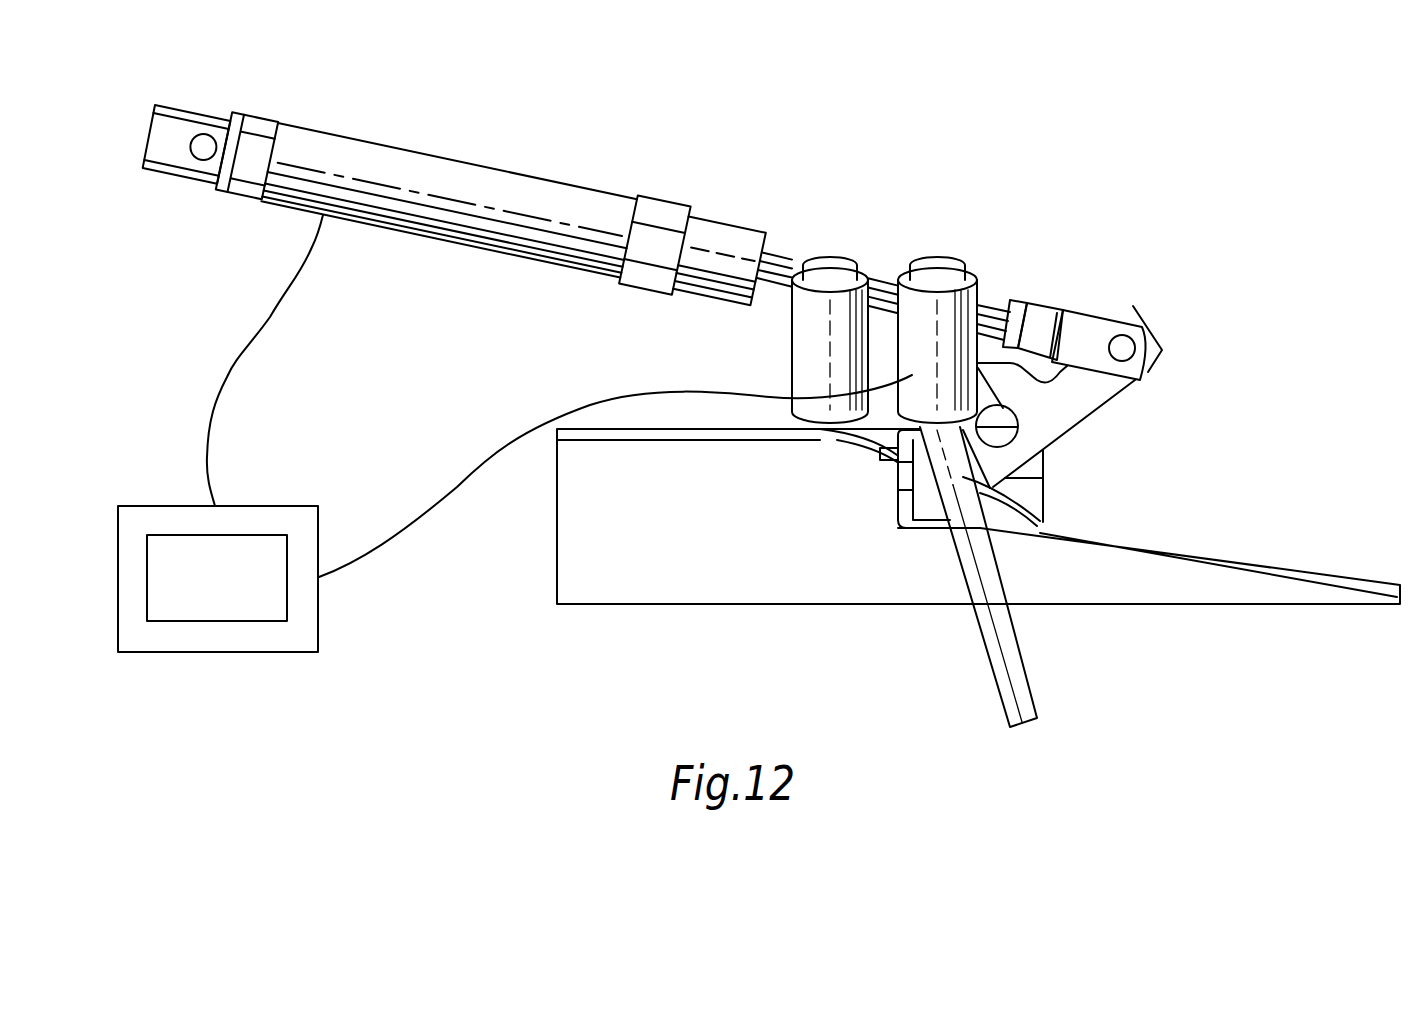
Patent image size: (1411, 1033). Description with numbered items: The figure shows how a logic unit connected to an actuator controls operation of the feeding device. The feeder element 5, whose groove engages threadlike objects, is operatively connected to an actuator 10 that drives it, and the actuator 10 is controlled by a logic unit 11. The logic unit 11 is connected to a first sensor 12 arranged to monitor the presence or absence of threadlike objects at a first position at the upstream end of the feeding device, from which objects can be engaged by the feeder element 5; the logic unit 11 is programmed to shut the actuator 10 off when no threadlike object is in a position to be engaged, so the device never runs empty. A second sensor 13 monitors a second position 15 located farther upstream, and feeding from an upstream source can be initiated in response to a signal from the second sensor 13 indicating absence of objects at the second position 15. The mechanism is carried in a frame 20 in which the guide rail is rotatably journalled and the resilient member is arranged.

The feeder element 5 is at (1077, 425).
The actuator 10 is at (493, 185).
The logic unit 11 is at (117, 563).
The first sensor 12 is at (967, 294).
The second sensor 13 is at (805, 357).
The second position 15 is at (840, 462).
The frame 20 is at (641, 588).